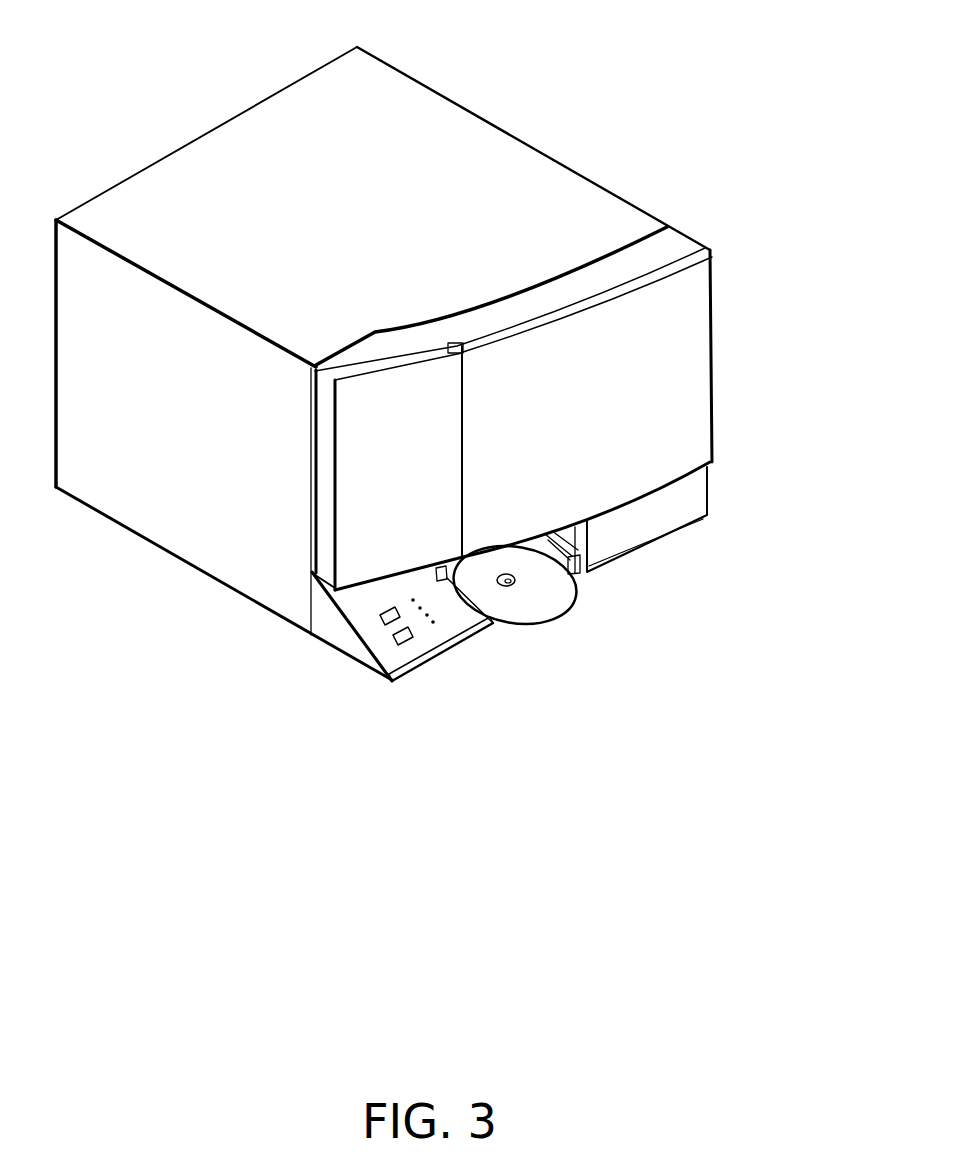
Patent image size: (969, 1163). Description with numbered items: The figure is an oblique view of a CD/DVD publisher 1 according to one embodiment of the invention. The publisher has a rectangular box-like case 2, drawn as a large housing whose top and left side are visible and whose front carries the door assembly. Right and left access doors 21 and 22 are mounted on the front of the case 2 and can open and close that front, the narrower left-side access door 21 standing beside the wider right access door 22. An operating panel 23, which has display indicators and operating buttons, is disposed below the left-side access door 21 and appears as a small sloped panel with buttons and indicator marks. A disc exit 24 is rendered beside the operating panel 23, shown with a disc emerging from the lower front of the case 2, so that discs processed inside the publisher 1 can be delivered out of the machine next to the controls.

The CD/DVD publisher 1 is at (532, 125).
The case 2 is at (571, 202).
The left-side access door 21 is at (376, 480).
The right access door 22 is at (682, 402).
The operating panel 23 is at (381, 633).
The disc exit 24 is at (545, 595).